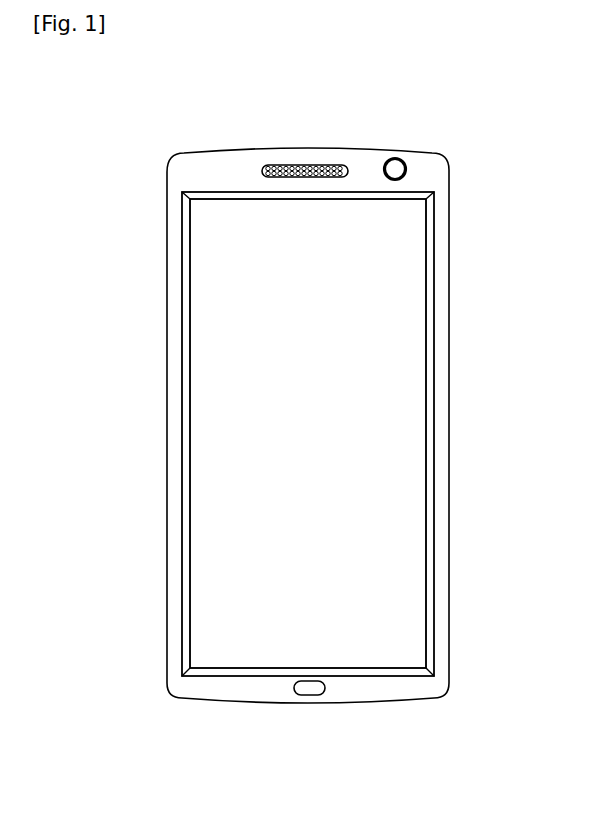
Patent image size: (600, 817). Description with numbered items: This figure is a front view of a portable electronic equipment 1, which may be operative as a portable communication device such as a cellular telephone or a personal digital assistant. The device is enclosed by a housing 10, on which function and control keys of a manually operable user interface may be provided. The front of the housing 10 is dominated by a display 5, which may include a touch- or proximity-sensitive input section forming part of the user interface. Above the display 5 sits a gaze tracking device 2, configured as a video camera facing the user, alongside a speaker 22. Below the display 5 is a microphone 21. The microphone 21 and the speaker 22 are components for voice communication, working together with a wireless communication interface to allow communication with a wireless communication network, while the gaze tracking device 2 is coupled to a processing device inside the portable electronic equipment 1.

The portable electronic equipment 1 is at (177, 141).
The gaze tracking device 2 is at (396, 154).
The display 5 is at (415, 240).
The housing 10 is at (392, 681).
The microphone 21 is at (313, 689).
The speaker 22 is at (305, 164).